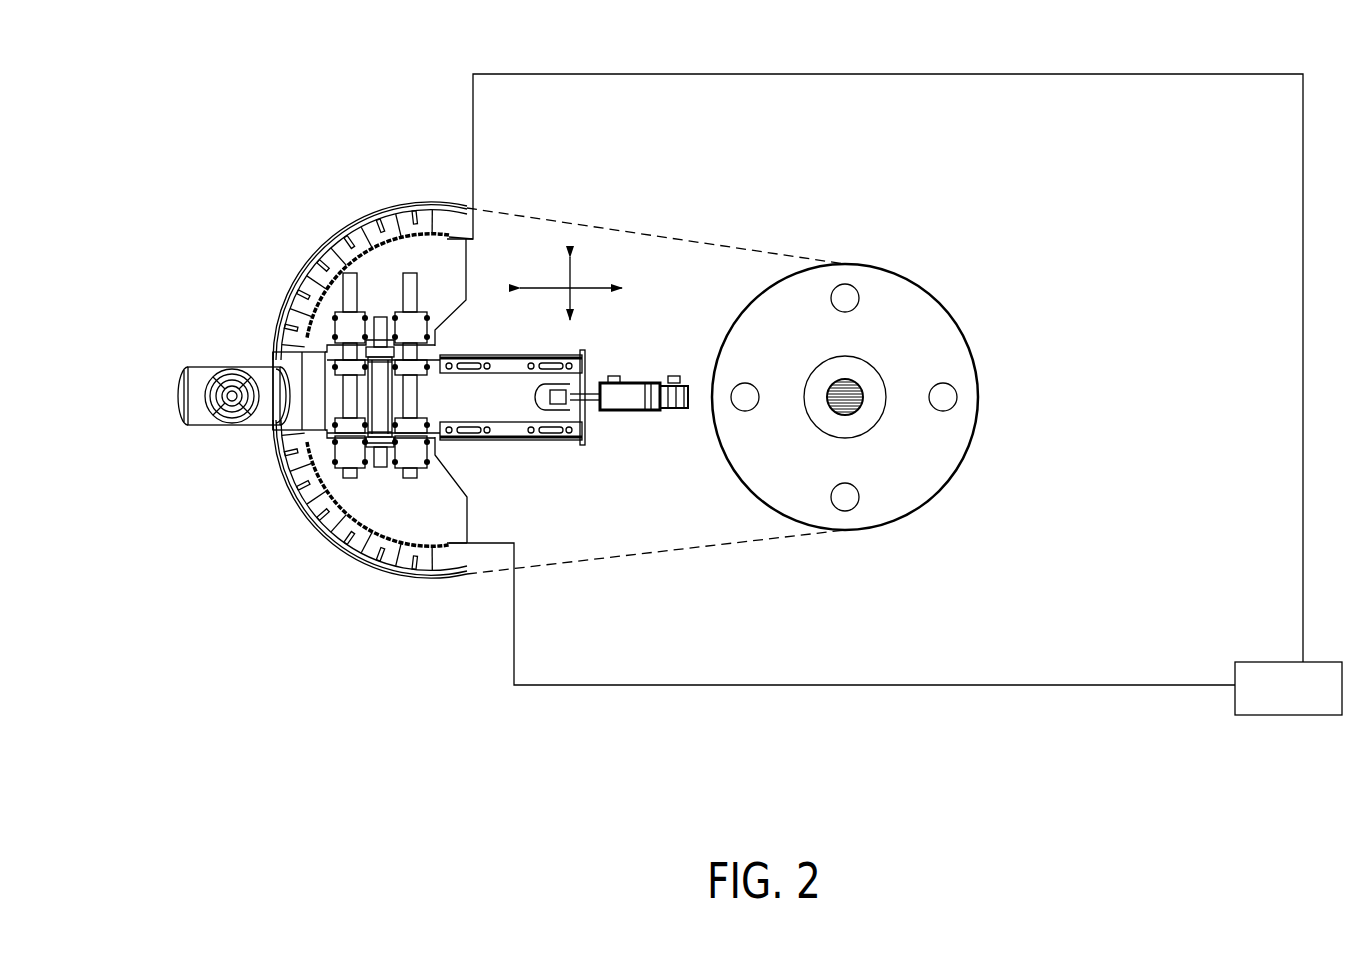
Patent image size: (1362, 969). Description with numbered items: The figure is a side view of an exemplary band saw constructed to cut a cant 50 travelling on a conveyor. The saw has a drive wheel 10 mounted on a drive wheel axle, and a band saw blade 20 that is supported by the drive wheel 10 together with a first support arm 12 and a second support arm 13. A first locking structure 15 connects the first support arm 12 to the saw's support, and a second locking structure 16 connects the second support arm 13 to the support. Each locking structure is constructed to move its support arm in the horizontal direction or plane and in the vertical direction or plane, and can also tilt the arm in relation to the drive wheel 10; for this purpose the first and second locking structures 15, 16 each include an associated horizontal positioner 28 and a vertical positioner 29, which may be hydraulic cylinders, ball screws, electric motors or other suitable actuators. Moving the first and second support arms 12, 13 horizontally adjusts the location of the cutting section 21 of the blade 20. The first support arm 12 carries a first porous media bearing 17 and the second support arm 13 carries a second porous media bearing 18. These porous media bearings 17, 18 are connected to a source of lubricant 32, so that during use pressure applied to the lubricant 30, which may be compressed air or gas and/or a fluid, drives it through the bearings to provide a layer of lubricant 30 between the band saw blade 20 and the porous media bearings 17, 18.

The drive wheel 10 is at (859, 357).
The first support arm 12 is at (365, 221).
The second support arm 13 is at (370, 600).
The first locking structure 15 is at (534, 292).
The second locking structure 16 is at (656, 437).
The first porous media bearing 17 is at (370, 221).
The second porous media bearing 18 is at (370, 600).
The band saw blade 20 is at (612, 528).
The cutting section 21 is at (235, 430).
The horizontal positioner 28 is at (725, 483).
The vertical positioner 29 is at (466, 294).
The lubricant 30 is at (854, 356).
The source of lubricant 32 is at (1236, 750).
The cant 50 is at (193, 368).